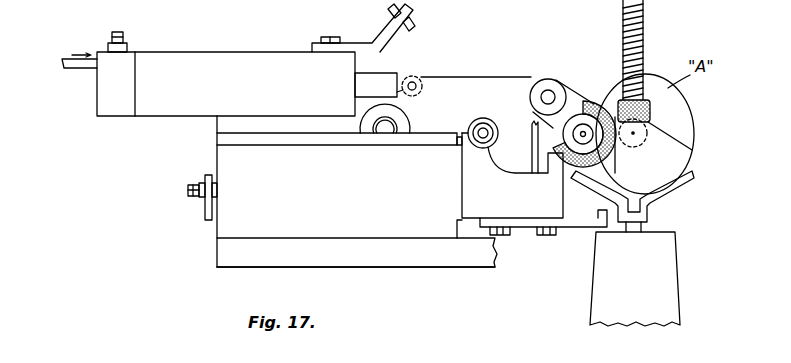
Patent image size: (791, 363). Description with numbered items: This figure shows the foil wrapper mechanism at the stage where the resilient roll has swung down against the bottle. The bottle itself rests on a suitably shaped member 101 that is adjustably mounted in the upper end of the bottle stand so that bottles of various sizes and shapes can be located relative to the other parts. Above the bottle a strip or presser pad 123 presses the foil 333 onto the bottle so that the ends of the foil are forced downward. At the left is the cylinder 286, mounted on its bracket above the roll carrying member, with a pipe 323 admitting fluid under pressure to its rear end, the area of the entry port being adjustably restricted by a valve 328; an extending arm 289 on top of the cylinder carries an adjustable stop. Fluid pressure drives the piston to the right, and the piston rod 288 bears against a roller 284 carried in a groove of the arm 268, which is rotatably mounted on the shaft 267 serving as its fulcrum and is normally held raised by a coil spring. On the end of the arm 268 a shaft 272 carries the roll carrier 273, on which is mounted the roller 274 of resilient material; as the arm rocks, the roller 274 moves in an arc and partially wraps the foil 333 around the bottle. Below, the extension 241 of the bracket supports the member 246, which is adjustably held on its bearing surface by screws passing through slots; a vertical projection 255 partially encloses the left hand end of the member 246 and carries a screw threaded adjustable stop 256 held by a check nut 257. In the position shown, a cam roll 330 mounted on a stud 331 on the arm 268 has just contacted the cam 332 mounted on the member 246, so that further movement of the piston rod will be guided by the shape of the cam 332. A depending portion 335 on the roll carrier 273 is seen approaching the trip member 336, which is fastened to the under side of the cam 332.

The suitably shaped member 101 is at (684, 188).
The strip or presser pad 123 is at (650, 112).
The extension 241 is at (229, 268).
The member 246 is at (227, 222).
The vertical projection 255 is at (205, 210).
The screw threaded adjustable stop 256 is at (188, 187).
The check nut 257 is at (198, 178).
The shaft 267 is at (382, 131).
The arm 268 is at (455, 82).
The shaft 272 is at (548, 79).
The roll carrier 273 is at (575, 96).
The roller of resilient material 274 is at (603, 82).
The roller 284 is at (417, 73).
The cylinder 286 is at (176, 52).
The piston rod 288 is at (379, 77).
The extending arm 289 is at (362, 43).
The pipe 323 is at (64, 69).
The valve 328 is at (120, 32).
The cam roll 330 is at (483, 117).
The stud 331 is at (480, 136).
The cam 332 is at (500, 207).
The foil 333 is at (693, 146).
The depending portion 335 is at (548, 172).
The trip member 336 is at (578, 220).